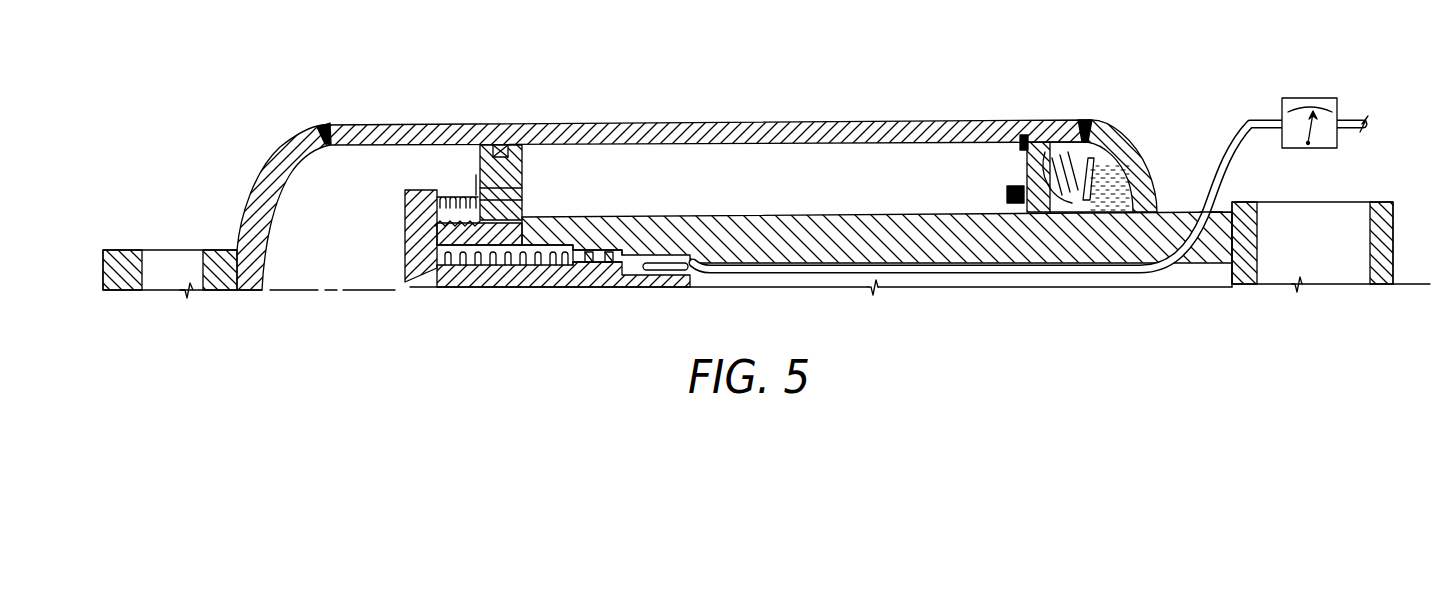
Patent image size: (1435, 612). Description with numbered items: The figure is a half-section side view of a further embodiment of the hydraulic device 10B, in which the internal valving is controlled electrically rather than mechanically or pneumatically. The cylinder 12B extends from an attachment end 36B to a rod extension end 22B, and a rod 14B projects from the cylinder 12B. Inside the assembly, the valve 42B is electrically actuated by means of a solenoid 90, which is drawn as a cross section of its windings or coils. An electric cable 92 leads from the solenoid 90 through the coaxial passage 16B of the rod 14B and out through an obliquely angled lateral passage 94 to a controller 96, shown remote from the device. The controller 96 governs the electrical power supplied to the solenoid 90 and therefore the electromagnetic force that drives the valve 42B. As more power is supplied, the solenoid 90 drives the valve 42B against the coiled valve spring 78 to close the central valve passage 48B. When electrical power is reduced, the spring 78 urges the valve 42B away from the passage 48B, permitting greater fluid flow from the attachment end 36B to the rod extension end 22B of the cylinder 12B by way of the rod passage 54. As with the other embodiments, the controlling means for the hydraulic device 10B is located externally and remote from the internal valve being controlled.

The hydraulic device 10B is at (983, 325).
The cylinder 12B is at (692, 122).
The rod 14B is at (880, 215).
The coaxial passage 16B is at (847, 280).
The rod extension end 22B is at (1052, 120).
The attachment end 36B is at (343, 125).
The valve 42B is at (572, 287).
The central valve passage 48B is at (405, 287).
The rod passage 54 is at (528, 243).
The coiled valve spring 78 is at (550, 248).
The solenoid 90 is at (672, 277).
The electric cable 92 is at (1247, 125).
The lateral passage 94 is at (1215, 212).
The controller 96 is at (1304, 98).